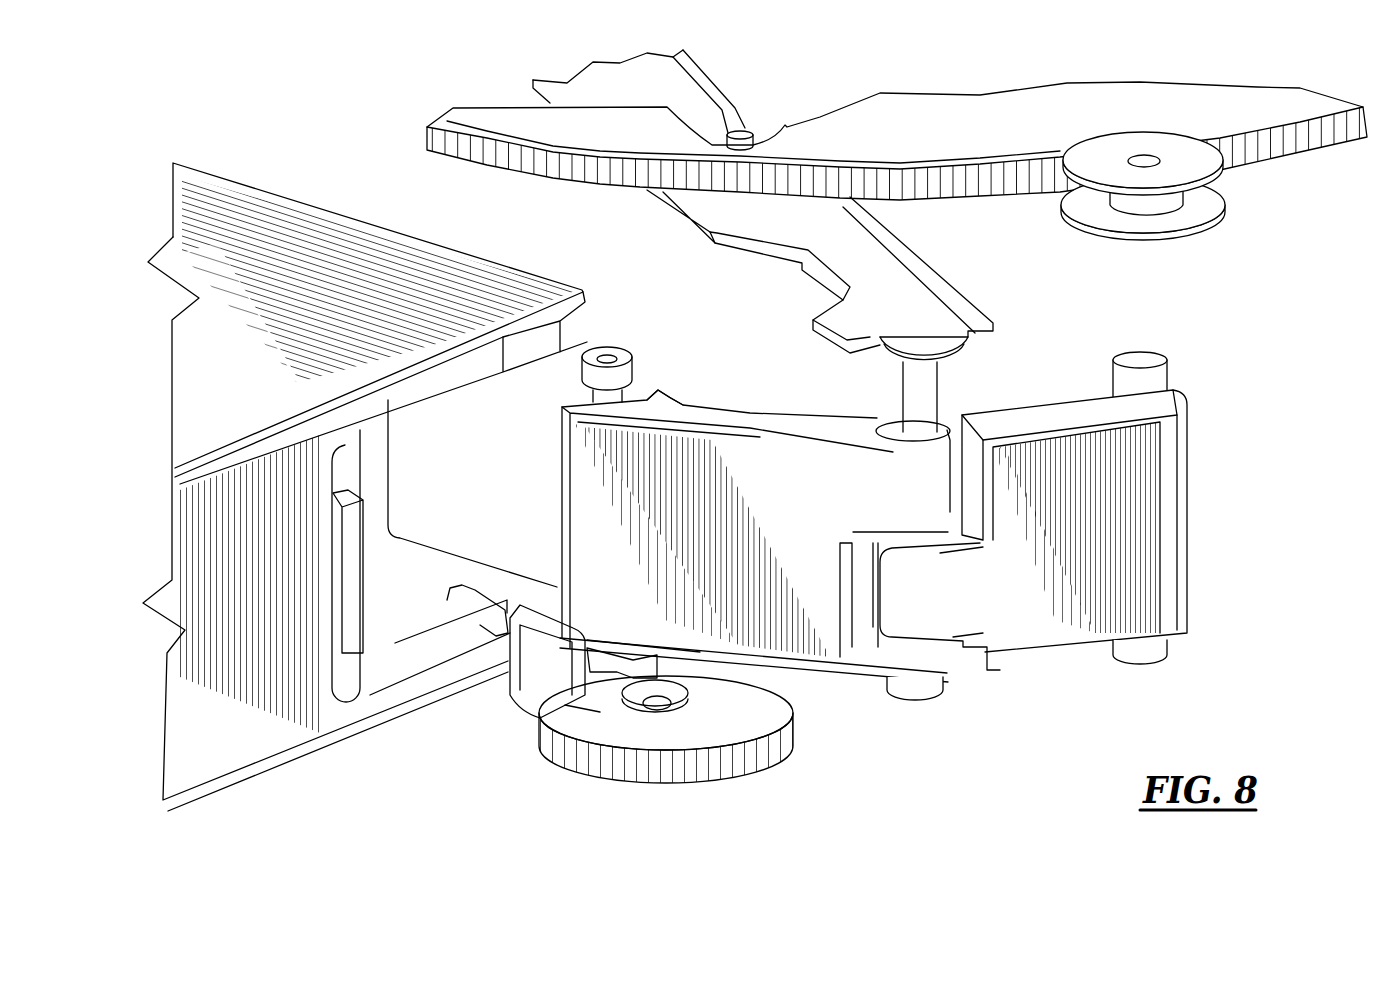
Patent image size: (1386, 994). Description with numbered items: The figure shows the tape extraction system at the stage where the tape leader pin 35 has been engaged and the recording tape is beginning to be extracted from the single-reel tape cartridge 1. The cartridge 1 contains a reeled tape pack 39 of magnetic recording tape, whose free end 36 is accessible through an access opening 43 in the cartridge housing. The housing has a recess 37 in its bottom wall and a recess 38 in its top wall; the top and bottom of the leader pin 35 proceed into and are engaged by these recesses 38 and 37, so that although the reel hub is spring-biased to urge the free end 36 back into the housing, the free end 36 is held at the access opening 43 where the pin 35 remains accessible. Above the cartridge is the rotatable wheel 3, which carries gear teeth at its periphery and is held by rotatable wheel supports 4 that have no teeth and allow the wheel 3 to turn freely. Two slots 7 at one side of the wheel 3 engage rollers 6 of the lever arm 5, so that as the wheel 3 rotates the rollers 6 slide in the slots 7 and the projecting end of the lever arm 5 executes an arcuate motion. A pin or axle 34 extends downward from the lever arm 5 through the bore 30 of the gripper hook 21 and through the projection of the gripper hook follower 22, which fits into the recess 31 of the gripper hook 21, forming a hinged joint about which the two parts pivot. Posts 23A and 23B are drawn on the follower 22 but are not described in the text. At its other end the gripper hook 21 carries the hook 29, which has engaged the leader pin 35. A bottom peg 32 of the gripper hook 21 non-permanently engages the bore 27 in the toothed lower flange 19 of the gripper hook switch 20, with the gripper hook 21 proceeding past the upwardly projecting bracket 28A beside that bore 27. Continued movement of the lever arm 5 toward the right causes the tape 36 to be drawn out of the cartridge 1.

The tape cartridge 1 is at (202, 197).
The rotatable wheel 3 is at (527, 120).
The rotatable wheel supports 4 is at (1113, 147).
The lever arm 5 is at (903, 280).
The rollers 6 is at (757, 137).
The slots 7 is at (753, 110).
The lower flange 19 is at (565, 705).
The gripper hook switch 20 is at (572, 787).
The gripper hook 21 is at (742, 410).
The gripper hook follower 22 is at (1193, 493).
The upper post 23A is at (1143, 358).
The lower post 23B is at (1137, 658).
The bore 27 is at (697, 680).
The bracket 28A is at (537, 657).
The hook 29 is at (648, 396).
The bore 30 is at (890, 430).
The recess 31 is at (905, 597).
The bottom peg 32 is at (913, 690).
The pin or axle 34 is at (937, 383).
The tape leader pin 35 is at (633, 350).
The free end of the recording tape 36 is at (453, 490).
The recess in bottom wall 37 is at (450, 592).
The recess in top wall 38 is at (592, 347).
The reeled tape pack 39 is at (353, 463).
The access opening 43 is at (360, 680).